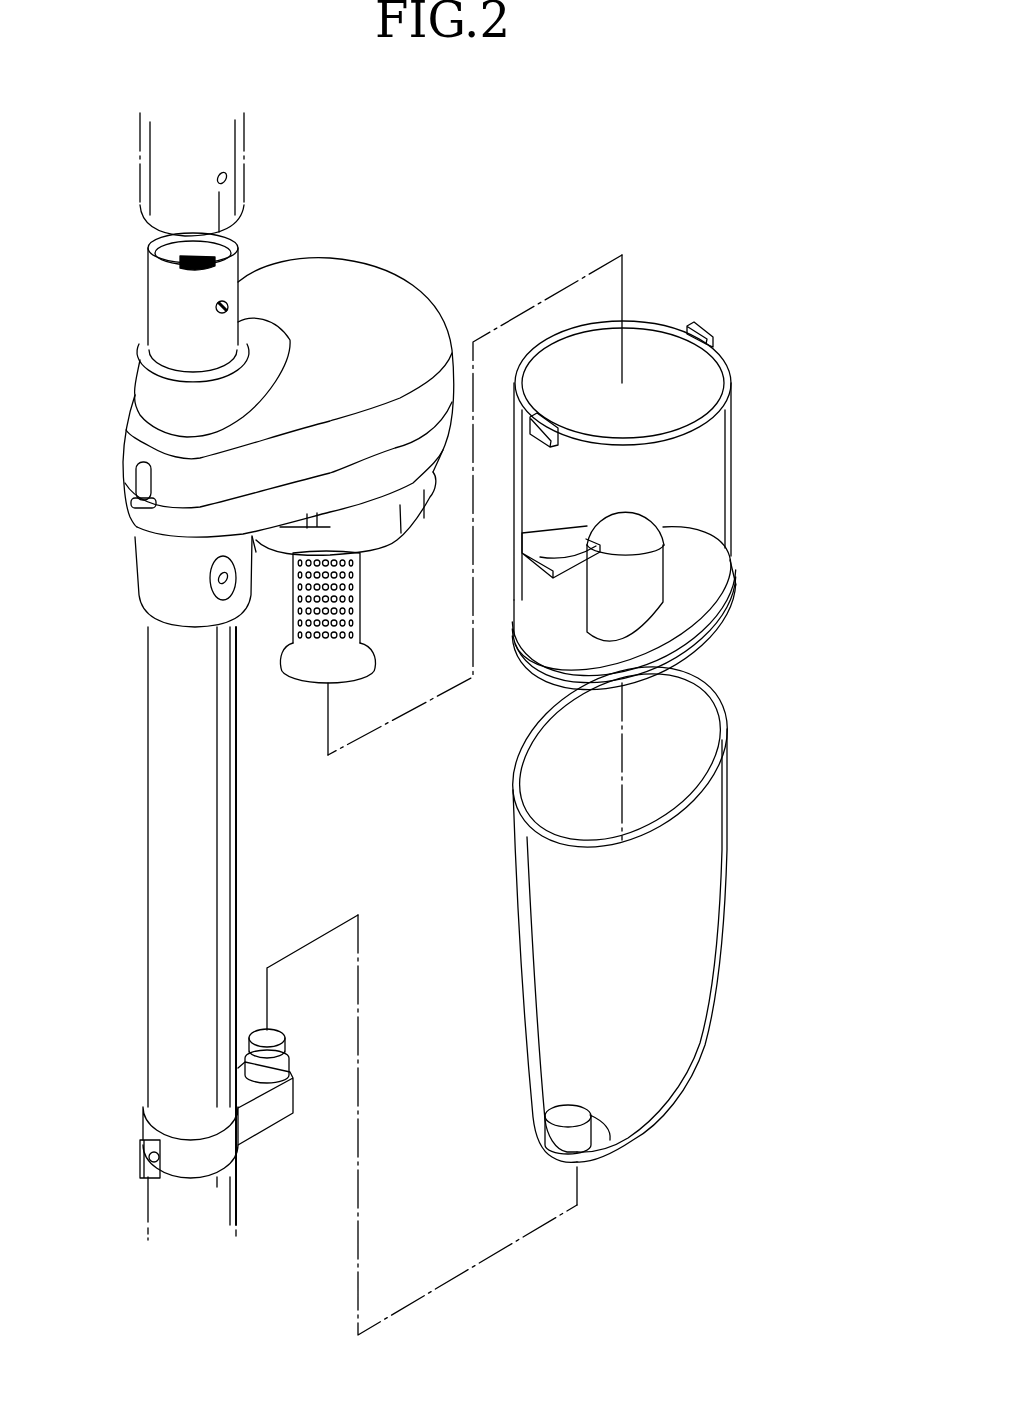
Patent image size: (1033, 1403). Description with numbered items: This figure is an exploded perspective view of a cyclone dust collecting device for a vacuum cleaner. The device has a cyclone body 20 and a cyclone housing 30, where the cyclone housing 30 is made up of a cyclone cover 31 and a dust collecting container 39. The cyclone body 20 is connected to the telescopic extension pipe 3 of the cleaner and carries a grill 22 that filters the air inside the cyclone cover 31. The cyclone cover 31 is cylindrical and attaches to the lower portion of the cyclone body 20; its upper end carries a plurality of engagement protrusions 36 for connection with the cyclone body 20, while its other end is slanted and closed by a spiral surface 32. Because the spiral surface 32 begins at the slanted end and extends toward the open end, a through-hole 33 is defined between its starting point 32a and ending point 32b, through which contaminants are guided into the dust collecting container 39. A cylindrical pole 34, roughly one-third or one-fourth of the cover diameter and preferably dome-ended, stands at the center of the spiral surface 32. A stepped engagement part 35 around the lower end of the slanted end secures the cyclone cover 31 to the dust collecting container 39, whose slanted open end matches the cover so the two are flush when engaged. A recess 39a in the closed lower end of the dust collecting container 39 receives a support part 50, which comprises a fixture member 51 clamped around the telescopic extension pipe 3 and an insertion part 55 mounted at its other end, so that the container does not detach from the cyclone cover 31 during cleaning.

The telescopic extension pipe 3 is at (151, 863).
The cyclone body 20 is at (370, 273).
The grill 22 is at (371, 657).
The cyclone housing 30 is at (830, 638).
The cyclone cover 31 is at (741, 612).
The spiral surface 32 is at (688, 574).
The starting point 32a is at (577, 652).
The ending point 32b is at (522, 556).
The through-hole 33 is at (533, 645).
The cylindrical pole 34 is at (648, 572).
The engagement part 35 is at (737, 581).
The engagement protrusions 36 is at (698, 330).
The dust collecting container 39 is at (745, 754).
The recess 39a is at (590, 1133).
The support part 50 is at (289, 1083).
The fixture member 51 is at (228, 1156).
The insertion part 55 is at (278, 1030).